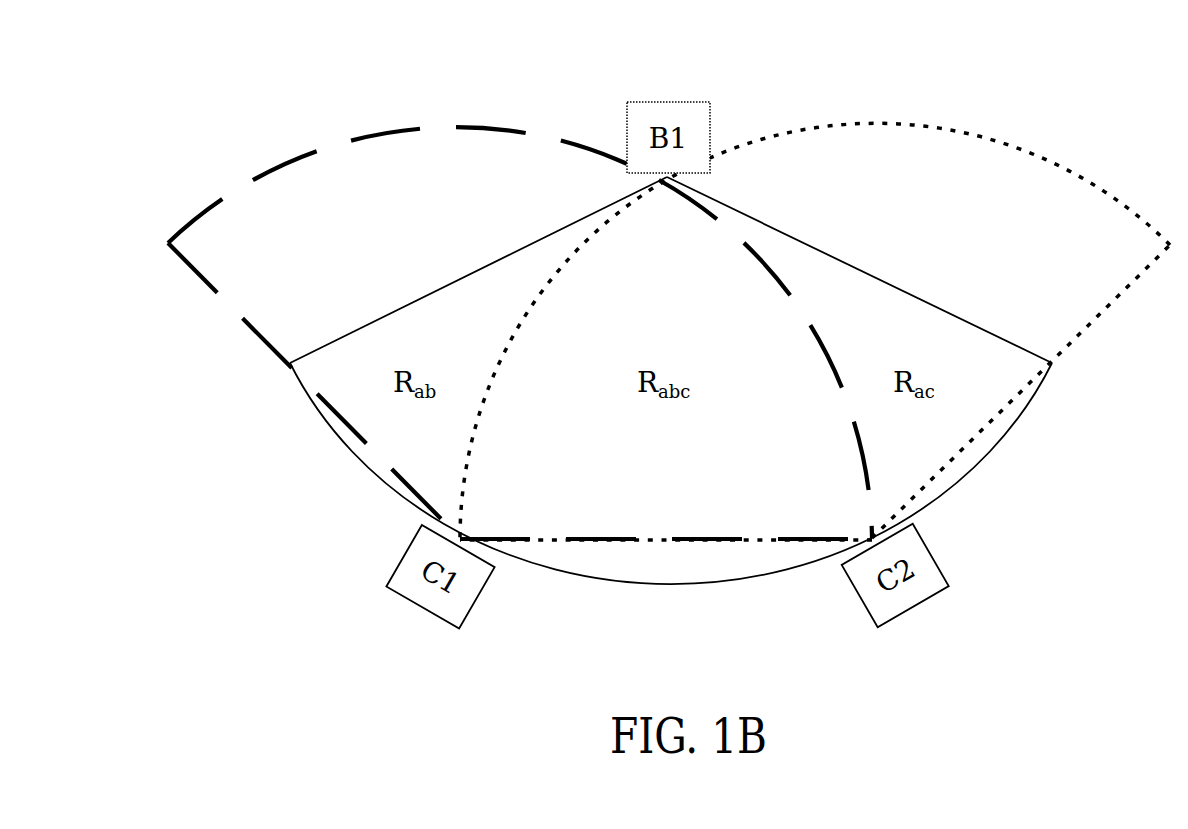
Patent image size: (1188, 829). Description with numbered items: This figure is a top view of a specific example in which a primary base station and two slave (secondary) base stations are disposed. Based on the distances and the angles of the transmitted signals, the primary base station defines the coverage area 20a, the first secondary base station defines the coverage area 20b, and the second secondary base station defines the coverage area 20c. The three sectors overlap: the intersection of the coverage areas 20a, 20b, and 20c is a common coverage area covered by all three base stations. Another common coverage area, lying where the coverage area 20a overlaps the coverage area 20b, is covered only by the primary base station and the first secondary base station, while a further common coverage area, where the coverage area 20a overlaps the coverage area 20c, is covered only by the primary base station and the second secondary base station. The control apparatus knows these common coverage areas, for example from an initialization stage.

The coverage area 20a is at (505, 258).
The coverage area 20b is at (336, 152).
The coverage area 20c is at (898, 124).